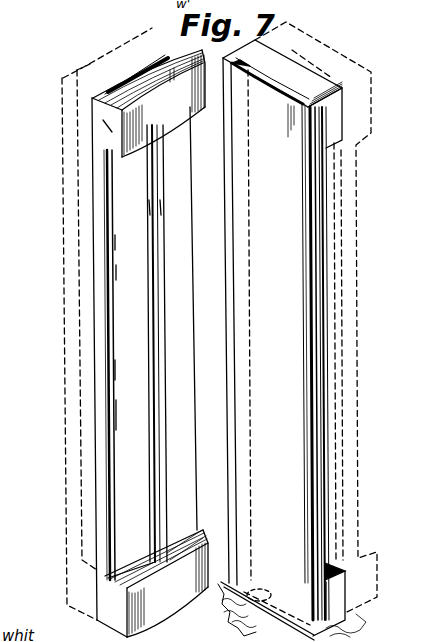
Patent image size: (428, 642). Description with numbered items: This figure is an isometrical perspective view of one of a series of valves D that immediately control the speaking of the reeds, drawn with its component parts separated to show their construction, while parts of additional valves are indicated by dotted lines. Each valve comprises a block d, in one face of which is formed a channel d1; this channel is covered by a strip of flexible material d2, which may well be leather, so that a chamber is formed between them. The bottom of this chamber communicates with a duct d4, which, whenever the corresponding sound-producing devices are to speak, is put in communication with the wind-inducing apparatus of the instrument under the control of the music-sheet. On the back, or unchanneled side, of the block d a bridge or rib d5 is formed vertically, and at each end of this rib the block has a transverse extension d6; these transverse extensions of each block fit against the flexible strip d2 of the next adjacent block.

The valve D is at (62, 200).
The block d is at (107, 287).
The channel d1 is at (331, 60).
The strip of flexible material d2 is at (136, 72).
The duct d4 is at (263, 591).
The bridge or rib d5 is at (153, 207).
The transverse extension d6 is at (386, 583).